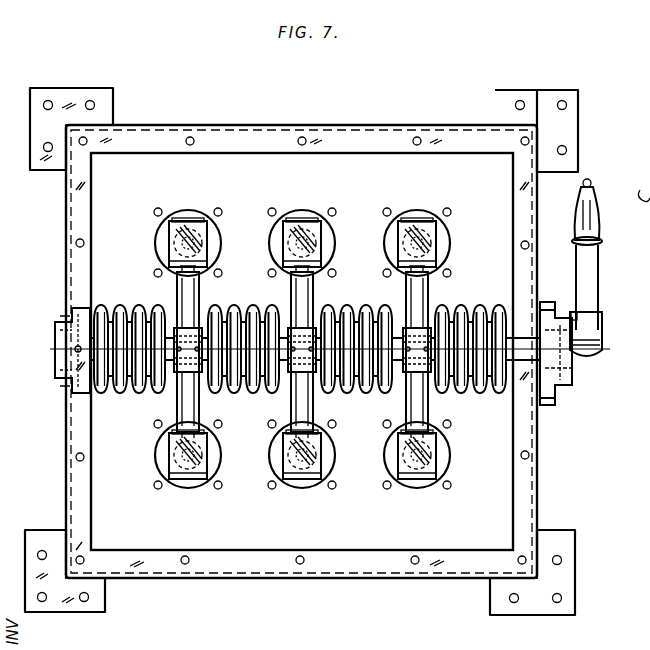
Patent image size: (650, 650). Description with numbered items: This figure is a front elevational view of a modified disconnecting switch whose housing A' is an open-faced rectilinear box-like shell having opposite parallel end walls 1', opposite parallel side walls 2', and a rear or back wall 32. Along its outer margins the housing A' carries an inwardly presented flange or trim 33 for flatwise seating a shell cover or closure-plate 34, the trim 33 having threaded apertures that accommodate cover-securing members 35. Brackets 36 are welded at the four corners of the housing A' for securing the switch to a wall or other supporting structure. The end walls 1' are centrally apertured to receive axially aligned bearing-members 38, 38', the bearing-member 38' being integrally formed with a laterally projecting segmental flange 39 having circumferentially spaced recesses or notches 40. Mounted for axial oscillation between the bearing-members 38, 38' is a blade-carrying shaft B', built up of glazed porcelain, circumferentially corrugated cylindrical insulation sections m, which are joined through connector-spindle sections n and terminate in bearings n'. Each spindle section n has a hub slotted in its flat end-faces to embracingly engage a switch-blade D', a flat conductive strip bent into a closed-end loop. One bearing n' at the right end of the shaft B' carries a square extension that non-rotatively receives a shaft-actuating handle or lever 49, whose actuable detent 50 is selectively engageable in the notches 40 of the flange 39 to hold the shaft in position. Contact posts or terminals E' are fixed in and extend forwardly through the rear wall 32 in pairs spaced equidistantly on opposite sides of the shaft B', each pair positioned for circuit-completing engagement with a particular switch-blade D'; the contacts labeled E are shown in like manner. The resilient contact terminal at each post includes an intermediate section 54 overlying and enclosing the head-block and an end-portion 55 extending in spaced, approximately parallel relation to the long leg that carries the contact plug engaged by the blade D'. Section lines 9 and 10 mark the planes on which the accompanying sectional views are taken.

The end walls 1' is at (299, 351).
The side walls 2' is at (239, 349).
The housing A' is at (404, 106).
The blade-carrying shaft B' is at (315, 315).
The switch-blade D' is at (300, 329).
The stationary contact E is at (176, 242).
The contact posts or terminals E' is at (316, 368).
The connector-spindle section n is at (301, 355).
The bearing n' is at (279, 293).
The insulation sections m is at (122, 394).
The section line 9- 9 is at (55, 349).
The section line 10- 10 is at (284, 203).
The rear wall 32 is at (156, 180).
The flange or trim 33 is at (238, 148).
The cover or closure-plate 34 is at (642, 505).
The cover-securing members 35 is at (643, 490).
The brackets 36 is at (30, 112).
The bearing-member 38 is at (62, 365).
The bearing-member 38' is at (559, 425).
The segmental flange 39 is at (566, 405).
The recesses or notches 40 is at (556, 316).
The shaft-actuating handle or lever 49 is at (592, 280).
The detent 50 is at (578, 316).
The intermediate section 54 is at (212, 464).
The end-portion 55 is at (206, 437).